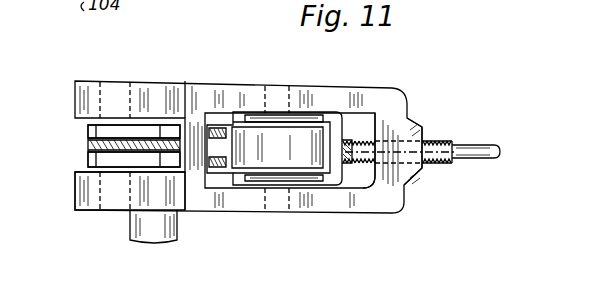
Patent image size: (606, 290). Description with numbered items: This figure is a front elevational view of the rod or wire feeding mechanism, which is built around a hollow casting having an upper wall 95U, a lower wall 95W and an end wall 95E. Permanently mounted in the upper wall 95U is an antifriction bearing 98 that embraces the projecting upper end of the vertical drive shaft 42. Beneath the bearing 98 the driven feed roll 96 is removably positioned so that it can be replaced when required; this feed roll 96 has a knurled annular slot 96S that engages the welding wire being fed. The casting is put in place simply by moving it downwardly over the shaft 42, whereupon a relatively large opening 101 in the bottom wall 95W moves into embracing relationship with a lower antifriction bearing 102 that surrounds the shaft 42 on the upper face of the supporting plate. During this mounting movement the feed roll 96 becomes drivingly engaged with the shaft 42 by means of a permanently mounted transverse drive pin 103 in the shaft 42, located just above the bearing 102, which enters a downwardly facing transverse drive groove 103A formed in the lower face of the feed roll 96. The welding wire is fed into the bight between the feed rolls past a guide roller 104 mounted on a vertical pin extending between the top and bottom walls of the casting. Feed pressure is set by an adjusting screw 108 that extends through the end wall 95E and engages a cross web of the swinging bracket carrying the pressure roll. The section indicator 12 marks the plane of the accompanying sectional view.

The section line 12- 12 is at (86, 146).
The drive shaft 42 is at (142, 238).
The upper wall 95U is at (362, 96).
The end wall 95E is at (404, 190).
The lower wall 95W is at (364, 211).
The feed roll 96 is at (88, 130).
The knurled annular slot 96S is at (80, 150).
The antifriction bearing 98 is at (209, 100).
The opening 101 is at (205, 210).
The lower antifriction bearing 102 is at (96, 210).
The transverse drive pin 103 is at (165, 168).
The transverse drive groove 103A is at (157, 125).
The guide roller 104 is at (303, 152).
The adjusting screw 108 is at (446, 163).